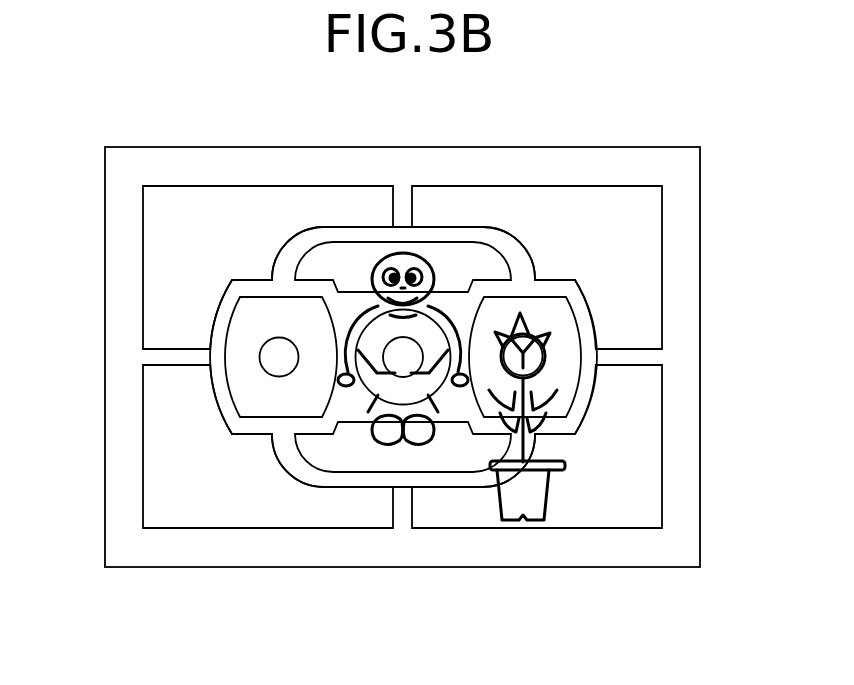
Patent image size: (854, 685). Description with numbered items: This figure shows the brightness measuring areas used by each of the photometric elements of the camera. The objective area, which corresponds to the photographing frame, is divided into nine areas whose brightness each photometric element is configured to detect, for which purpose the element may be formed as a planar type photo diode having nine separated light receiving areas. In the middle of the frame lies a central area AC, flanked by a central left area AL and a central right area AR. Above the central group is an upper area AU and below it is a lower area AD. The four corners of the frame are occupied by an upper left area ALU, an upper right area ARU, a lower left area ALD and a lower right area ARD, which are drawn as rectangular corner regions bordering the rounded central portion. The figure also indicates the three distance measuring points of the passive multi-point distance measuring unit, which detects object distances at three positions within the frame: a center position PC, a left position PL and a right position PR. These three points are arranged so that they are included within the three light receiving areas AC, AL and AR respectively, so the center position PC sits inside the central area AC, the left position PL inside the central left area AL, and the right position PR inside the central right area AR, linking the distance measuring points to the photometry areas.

The upper left area ALU is at (192, 200).
The upper right area ARU is at (597, 200).
The lower left area ALD is at (188, 508).
The lower right area ARD is at (627, 510).
The upper area AU is at (335, 260).
The lower area AD is at (453, 458).
The central left area AL is at (247, 393).
The central right area AR is at (565, 380).
The central area AC is at (383, 395).
The left position PL is at (257, 350).
The center position PC is at (420, 343).
The right position PR is at (553, 355).